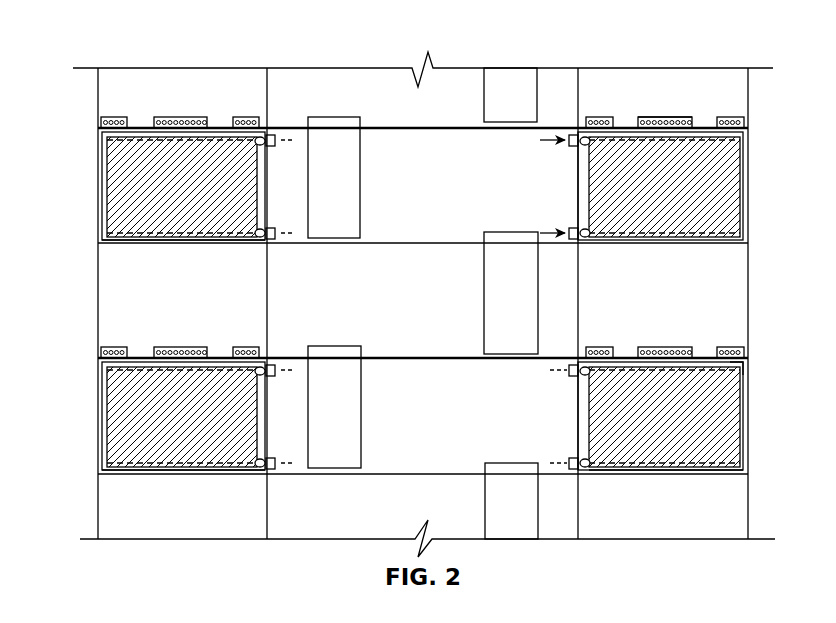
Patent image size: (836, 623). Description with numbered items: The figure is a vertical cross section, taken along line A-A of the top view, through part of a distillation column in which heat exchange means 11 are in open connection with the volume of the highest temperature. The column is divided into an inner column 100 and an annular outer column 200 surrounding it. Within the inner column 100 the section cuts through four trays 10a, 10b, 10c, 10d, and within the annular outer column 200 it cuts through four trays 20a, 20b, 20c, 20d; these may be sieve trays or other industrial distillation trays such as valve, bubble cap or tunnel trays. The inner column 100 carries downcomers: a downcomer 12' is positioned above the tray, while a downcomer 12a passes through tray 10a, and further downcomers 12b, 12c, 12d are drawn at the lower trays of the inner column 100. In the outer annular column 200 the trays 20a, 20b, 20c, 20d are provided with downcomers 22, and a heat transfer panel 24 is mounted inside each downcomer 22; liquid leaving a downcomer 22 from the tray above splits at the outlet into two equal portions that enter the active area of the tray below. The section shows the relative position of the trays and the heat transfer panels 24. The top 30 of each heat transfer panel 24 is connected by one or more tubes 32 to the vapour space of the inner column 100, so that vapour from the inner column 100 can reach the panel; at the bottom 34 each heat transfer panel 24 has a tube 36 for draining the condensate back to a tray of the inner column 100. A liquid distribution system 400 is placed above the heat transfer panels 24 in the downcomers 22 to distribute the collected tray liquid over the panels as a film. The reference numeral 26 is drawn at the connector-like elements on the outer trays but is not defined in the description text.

The inner column 100 is at (453, 90).
The heat exchange means 11 is at (572, 126).
The tray 10a is at (400, 126).
The tray 10b is at (425, 241).
The tray 10c is at (422, 356).
The tray 10d is at (402, 472).
The downcomer 12' is at (510, 72).
The downcomer 12a is at (354, 191).
The downcomer 12b is at (532, 306).
The downcomer 12c is at (356, 421).
The downcomer 12d is at (532, 516).
The tray 20a is at (143, 125).
The tray 20b is at (143, 241).
The tray 20c is at (142, 354).
The tray 20d is at (143, 471).
The annular outer column 200 is at (168, 96).
The liquid distribution system 400 is at (110, 344).
The downcomer 22 is at (716, 174).
The heat transfer panel 24 is at (709, 416).
The connector terminal 26 is at (676, 114).
The top 30 is at (738, 368).
The tube 32 is at (574, 381).
The bottom 34 is at (676, 474).
The tube 36 is at (572, 478).